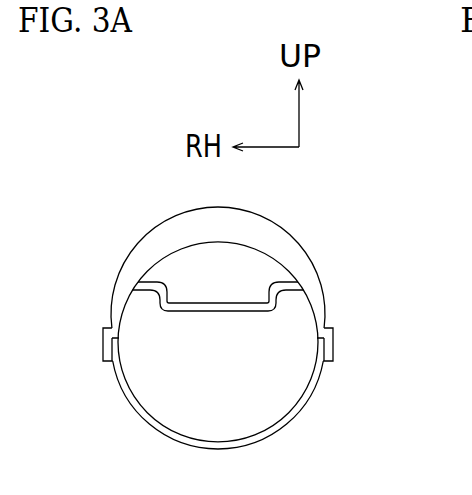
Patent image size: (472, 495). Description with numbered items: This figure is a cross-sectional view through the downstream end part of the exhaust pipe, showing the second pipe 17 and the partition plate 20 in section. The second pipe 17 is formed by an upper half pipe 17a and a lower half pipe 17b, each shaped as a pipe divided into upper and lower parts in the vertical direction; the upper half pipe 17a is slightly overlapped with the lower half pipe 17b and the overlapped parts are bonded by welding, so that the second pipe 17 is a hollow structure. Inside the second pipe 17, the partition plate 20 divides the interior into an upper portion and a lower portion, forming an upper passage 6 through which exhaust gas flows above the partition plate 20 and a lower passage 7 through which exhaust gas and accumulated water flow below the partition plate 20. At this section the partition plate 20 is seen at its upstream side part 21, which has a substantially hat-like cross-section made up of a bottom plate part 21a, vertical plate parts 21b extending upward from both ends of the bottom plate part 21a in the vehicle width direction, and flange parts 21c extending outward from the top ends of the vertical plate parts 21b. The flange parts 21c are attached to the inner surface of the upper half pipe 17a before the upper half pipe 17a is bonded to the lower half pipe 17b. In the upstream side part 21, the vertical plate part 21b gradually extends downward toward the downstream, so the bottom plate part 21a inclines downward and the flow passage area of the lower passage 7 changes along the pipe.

The second pipe 17 is at (255, 303).
The upper half pipe 17a is at (312, 291).
The lower half pipe 17b is at (313, 392).
The partition plate 20 is at (174, 326).
The upstream side part 21 is at (174, 326).
The bottom plate part 21a is at (198, 317).
The vertical plate part 21b is at (160, 302).
The flange part 21c is at (155, 278).
The upper passage 6 is at (240, 291).
The lower passage 7 is at (230, 394).